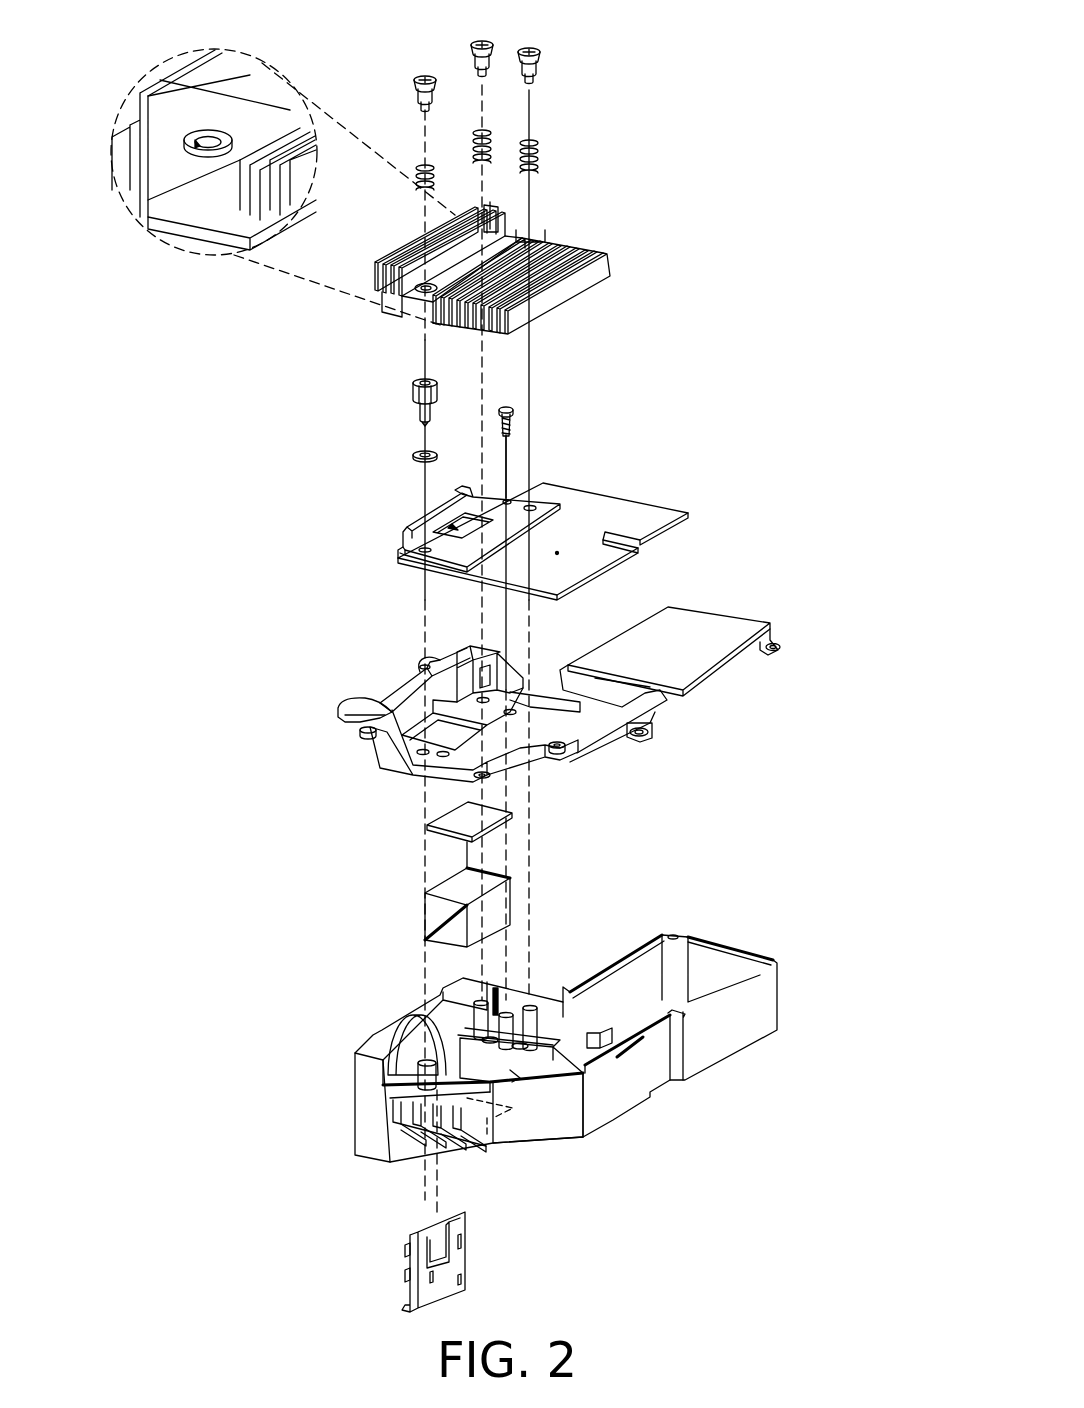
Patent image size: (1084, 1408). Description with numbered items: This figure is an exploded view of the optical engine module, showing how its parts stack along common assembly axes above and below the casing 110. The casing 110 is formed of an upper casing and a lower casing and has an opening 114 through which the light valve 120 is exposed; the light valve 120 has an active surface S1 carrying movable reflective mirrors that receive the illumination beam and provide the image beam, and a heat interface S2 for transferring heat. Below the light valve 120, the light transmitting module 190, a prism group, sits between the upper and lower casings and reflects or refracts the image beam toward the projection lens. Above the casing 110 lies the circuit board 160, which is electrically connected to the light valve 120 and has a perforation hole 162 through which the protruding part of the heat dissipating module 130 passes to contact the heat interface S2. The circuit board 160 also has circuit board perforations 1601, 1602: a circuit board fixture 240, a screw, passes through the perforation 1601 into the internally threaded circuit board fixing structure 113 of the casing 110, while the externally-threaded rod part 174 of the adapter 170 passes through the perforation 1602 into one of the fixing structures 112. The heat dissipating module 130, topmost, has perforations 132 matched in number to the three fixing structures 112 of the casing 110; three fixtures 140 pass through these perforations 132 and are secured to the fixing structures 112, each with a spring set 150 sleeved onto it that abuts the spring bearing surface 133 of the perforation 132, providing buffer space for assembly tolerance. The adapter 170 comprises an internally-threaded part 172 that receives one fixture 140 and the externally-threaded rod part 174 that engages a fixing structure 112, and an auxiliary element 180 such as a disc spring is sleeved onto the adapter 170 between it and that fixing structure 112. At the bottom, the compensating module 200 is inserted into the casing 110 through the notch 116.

The casing 110 is at (832, 688).
The fixing structure 112 is at (535, 1013).
The circuit board fixing structure 113 is at (515, 1076).
The opening 114 is at (360, 728).
The notch 116 is at (488, 1138).
The light valve 120 is at (498, 817).
The active surface S1 is at (450, 839).
The heat interface S2 is at (468, 819).
The heat dissipating module 130 is at (603, 272).
The perforation 132 is at (545, 242).
The spring bearing surface 133 is at (190, 144).
The fixture 140 is at (527, 47).
The spring set 150 is at (540, 146).
The circuit board 160 is at (608, 503).
The circuit board perforation 1601 is at (515, 498).
The circuit board perforation 1602 is at (405, 552).
The perforation hole 162 is at (452, 524).
The adapter 170 is at (352, 405).
The internally-threaded part 172 is at (412, 390).
The externally-threaded rod part 174 is at (418, 415).
The auxiliary element 180 is at (410, 456).
The light transmitting module 190 is at (484, 878).
The compensating module 200 is at (412, 1265).
The circuit board fixture 240 is at (513, 412).